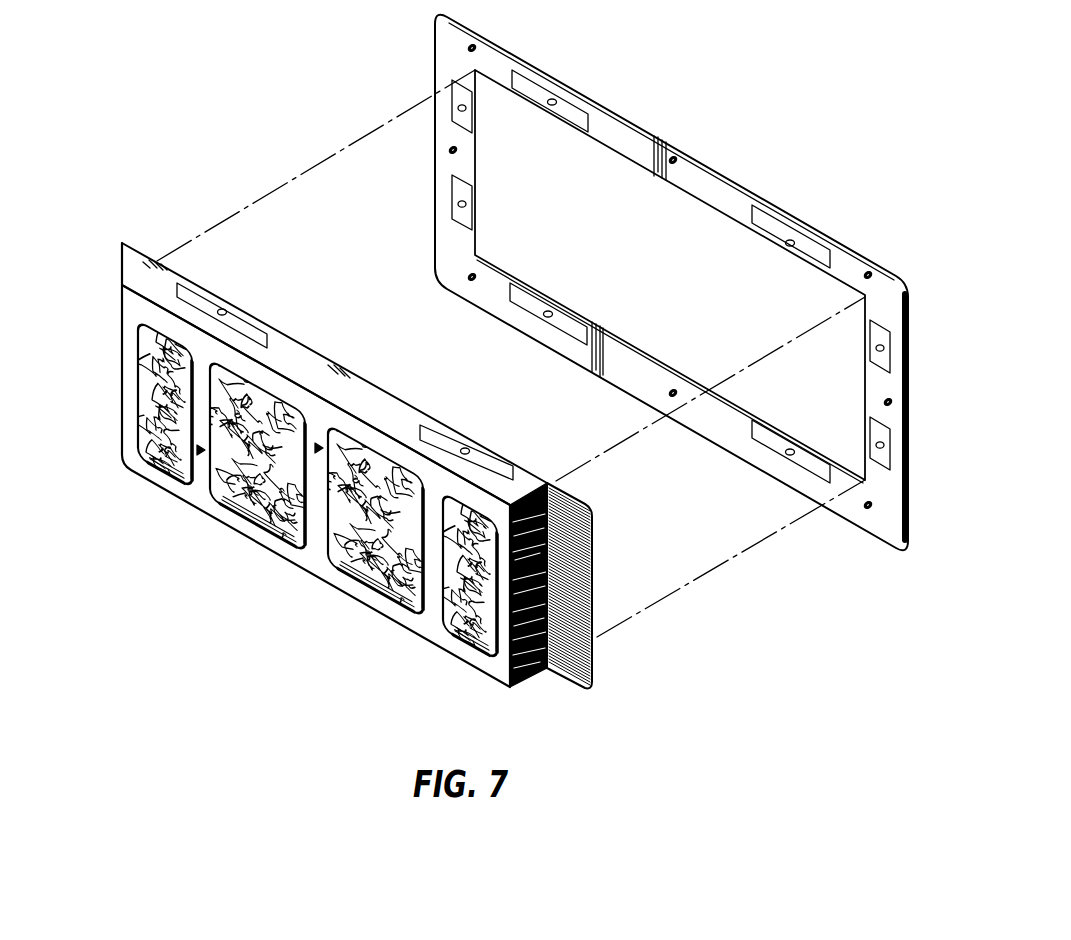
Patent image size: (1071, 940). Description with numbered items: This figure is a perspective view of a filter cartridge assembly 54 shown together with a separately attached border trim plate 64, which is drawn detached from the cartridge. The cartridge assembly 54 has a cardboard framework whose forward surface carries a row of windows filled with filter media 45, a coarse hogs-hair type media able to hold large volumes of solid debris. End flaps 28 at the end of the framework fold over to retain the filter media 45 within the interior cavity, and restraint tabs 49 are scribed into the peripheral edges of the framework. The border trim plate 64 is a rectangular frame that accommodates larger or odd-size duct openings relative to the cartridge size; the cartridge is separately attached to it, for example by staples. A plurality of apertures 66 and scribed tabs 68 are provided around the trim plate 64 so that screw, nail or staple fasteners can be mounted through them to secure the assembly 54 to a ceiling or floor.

The end flaps 28 is at (590, 555).
The filter media 45 is at (357, 557).
The restraint tabs 49 is at (447, 435).
The cartridge assembly 54 is at (121, 367).
The border trim plate 64 is at (485, 45).
The apertures 66 is at (680, 155).
The scribed tabs 68 is at (555, 100).